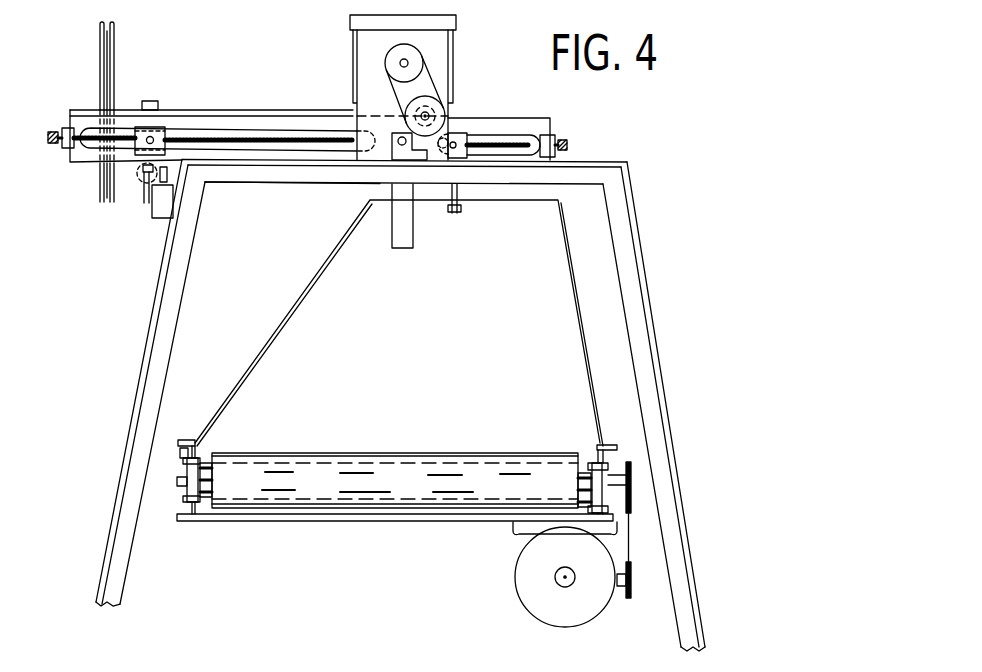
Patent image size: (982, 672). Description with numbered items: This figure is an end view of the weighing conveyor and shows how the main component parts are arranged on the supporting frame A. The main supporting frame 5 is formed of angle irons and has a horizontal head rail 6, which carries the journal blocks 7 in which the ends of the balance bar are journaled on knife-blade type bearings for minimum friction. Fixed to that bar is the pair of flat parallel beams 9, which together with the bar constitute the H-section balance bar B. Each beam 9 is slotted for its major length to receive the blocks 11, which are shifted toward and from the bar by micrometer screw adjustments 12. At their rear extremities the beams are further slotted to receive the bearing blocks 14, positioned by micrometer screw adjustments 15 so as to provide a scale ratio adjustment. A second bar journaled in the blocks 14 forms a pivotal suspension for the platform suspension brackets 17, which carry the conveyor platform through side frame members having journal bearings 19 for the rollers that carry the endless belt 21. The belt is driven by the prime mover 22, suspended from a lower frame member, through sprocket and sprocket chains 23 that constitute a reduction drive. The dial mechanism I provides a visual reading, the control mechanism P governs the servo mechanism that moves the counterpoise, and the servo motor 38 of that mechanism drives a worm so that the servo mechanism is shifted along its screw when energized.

The dial mechanism I is at (95, 52).
The micrometer screw adjustment 12 is at (48, 138).
The block 11 is at (161, 133).
The flat parallel beam 9 is at (236, 118).
The balance bar B is at (290, 109).
The control mechanism P is at (458, 40).
The bearing block 14 is at (461, 133).
The micrometer screw adjustment 15 is at (568, 141).
The supporting frame A is at (647, 236).
The journal block 7 is at (390, 152).
The horizontal head rail 6 is at (311, 176).
The servo motor 38 is at (152, 217).
The main supporting frame 5 is at (149, 322).
The platform suspension bracket 17 is at (573, 300).
The endless belt 21 is at (398, 453).
The journal bearing 19 is at (183, 490).
The prime mover 22 is at (527, 580).
The sprocket and sprocket chain 23 is at (630, 540).